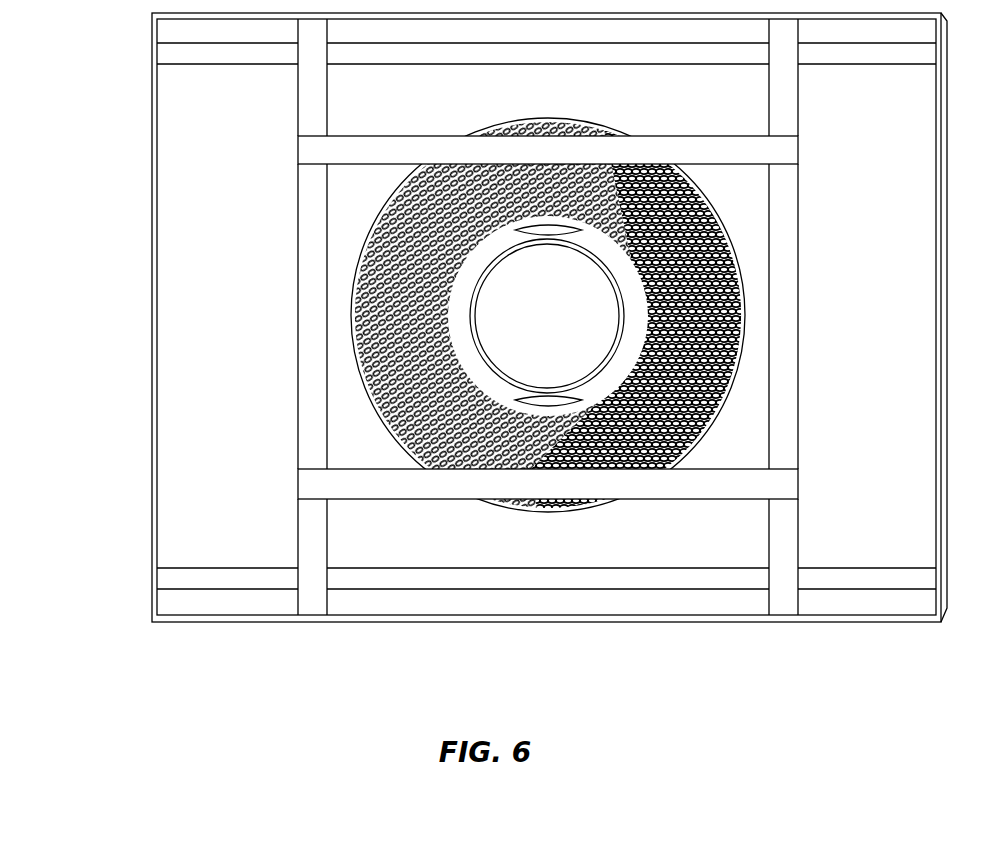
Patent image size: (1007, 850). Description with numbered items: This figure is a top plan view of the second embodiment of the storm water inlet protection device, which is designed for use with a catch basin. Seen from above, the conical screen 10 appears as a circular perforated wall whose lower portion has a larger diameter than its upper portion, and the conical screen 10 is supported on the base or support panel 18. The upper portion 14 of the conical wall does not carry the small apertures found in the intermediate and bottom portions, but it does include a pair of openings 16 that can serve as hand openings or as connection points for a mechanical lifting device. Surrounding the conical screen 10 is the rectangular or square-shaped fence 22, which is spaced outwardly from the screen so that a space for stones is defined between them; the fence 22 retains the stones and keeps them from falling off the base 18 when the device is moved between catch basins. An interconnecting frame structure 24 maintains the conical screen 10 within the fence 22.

The conical screen 10 is at (342, 421).
The upper portion 14 is at (633, 328).
The pair of openings 16 is at (722, 398).
The base or support panel 18 is at (393, 527).
The fence 22 is at (122, 280).
The interconnecting frame structure 24 is at (316, 538).